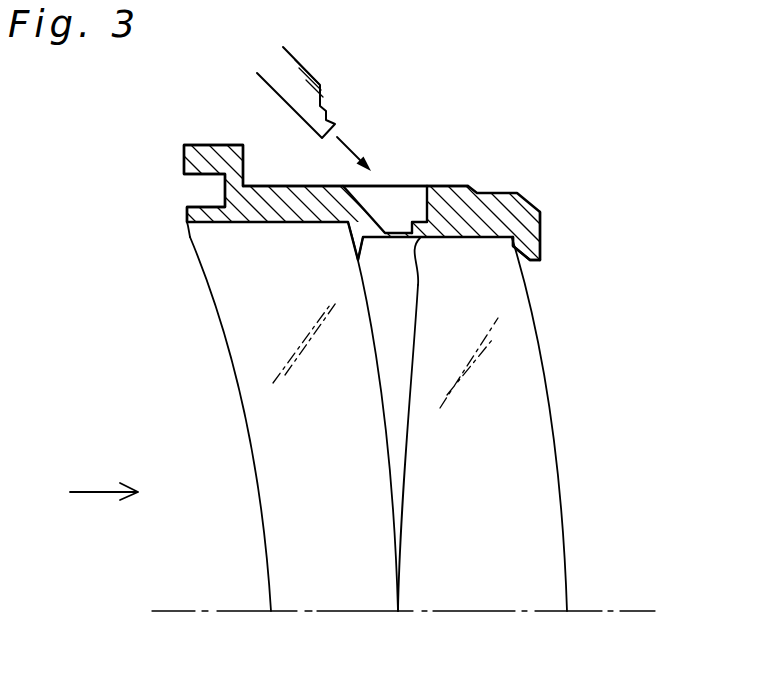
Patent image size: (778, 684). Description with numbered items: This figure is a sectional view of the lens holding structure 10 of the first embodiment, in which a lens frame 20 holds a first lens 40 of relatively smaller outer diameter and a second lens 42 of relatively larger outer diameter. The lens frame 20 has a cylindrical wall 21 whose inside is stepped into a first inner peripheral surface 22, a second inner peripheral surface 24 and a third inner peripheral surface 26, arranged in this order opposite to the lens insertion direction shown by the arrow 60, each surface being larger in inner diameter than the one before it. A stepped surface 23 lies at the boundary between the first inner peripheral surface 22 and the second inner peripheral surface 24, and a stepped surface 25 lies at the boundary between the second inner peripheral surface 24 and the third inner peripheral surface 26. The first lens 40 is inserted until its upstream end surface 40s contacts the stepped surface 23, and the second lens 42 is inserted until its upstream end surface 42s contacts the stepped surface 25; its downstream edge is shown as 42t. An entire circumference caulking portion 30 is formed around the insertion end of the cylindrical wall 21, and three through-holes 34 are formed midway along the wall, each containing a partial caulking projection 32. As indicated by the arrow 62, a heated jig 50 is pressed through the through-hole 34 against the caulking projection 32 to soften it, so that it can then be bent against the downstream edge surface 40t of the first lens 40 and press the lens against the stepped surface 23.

The lens holding structure 10 is at (585, 160).
The lens frame 20 is at (541, 221).
The cylindrical wall 21 is at (283, 197).
The first inner peripheral surface 22 is at (532, 263).
The stepped surface 23 is at (502, 248).
The second inner peripheral surface 24 is at (472, 240).
The stepped surface 25 is at (350, 226).
The third inner peripheral surface 26 is at (252, 226).
The entire circumference caulking portion 30 is at (190, 195).
The partial caulking projection 32 is at (419, 193).
The through-hole 34 is at (397, 193).
The first lens 40 is at (507, 451).
The end surface of first lens 40s is at (539, 245).
The edge surface of first lens 40t is at (426, 240).
The second lens 42 is at (241, 436).
The end surface of second lens 42s is at (356, 262).
The tip of first tooth 42t is at (187, 223).
The heated jig 50 is at (307, 69).
The arrow 60 is at (92, 493).
The arrow 62 is at (347, 140).